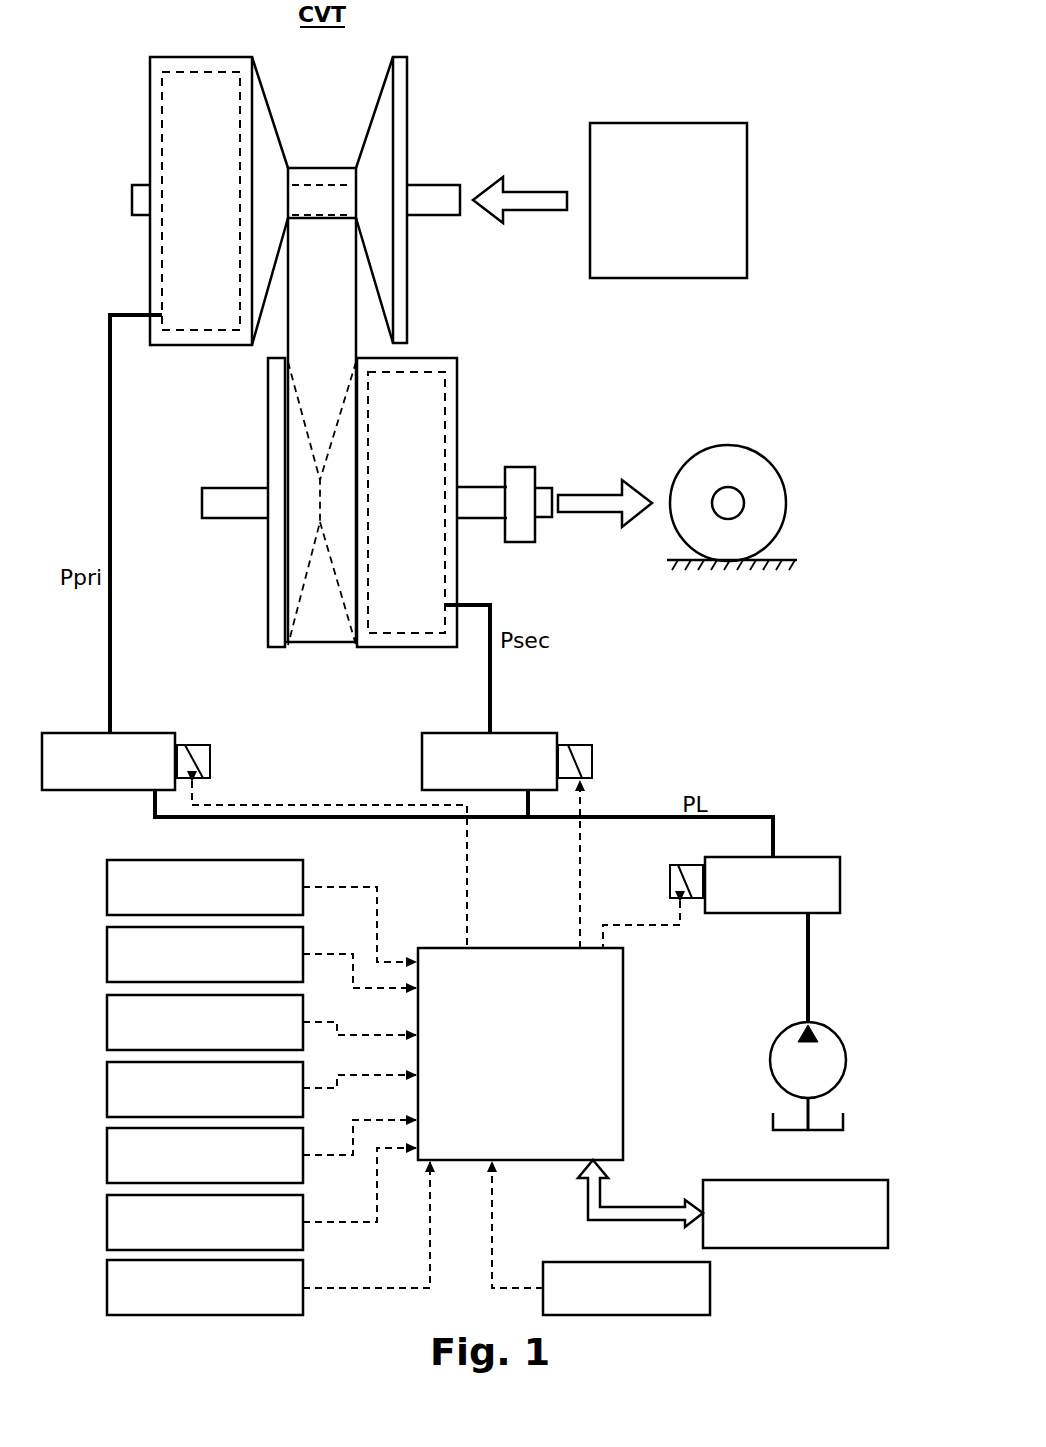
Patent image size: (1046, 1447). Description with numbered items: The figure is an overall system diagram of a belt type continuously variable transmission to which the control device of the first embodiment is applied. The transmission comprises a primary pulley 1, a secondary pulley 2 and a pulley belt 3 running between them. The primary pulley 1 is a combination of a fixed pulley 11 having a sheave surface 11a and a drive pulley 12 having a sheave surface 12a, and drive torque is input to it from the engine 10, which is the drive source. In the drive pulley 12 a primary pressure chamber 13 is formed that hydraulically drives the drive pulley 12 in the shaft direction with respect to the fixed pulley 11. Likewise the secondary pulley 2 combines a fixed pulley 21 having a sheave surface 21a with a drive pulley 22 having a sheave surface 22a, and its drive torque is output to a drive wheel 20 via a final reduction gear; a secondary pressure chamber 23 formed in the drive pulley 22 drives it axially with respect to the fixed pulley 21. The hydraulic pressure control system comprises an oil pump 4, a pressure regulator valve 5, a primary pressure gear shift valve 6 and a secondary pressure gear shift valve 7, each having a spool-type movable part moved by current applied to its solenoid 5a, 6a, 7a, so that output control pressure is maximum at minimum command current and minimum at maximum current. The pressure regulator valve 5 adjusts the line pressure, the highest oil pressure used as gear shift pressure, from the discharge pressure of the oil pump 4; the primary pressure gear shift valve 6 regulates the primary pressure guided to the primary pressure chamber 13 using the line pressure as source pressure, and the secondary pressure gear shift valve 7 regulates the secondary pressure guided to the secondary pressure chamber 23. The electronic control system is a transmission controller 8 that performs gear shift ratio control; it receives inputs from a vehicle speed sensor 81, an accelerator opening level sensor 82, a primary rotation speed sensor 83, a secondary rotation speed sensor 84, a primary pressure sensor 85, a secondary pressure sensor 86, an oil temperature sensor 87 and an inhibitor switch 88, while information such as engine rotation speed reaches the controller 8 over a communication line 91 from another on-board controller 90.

The primary pulley 1 is at (443, 73).
The secondary pulley 2 is at (478, 432).
The pulley belt 3 is at (327, 162).
The oil pump 4 is at (845, 1030).
The pressure regulator valve 5 is at (844, 854).
The solenoid 5a is at (688, 863).
The primary pressure gear shift valve 6 is at (166, 733).
The solenoid 6a is at (211, 762).
The secondary pressure gear shift valve 7 is at (549, 733).
The solenoid 7a is at (593, 762).
The CVT controller 8 is at (625, 958).
The engine 10 is at (682, 120).
The fixed pulley 11 is at (399, 287).
The sheave surface 11a is at (378, 100).
The drive pulley 12 is at (262, 272).
The sheave surface 12a is at (270, 97).
The primary pressure chamber 13 is at (168, 266).
The drive wheel 20 is at (735, 438).
The fixed pulley 21 is at (278, 607).
The sheave surface 21a is at (312, 595).
The drive pulley 22 is at (344, 527).
The sheave surface 22a is at (338, 590).
The secondary pressure chamber 23 is at (450, 394).
The vehicle speed sensor 81 is at (107, 887).
The accelerator opening level sensor 82 is at (107, 954).
The primary rotation speed sensor 83 is at (107, 1022).
The secondary rotation speed sensor 84 is at (107, 1088).
The primary pressure sensor 85 is at (107, 1155).
The secondary pressure sensor 86 is at (107, 1222).
The oil temperature sensor 87 is at (107, 1288).
The inhibitor switch 88 is at (711, 1292).
The on-board controller 90 is at (767, 1180).
The CAN communication line 91 is at (587, 1210).